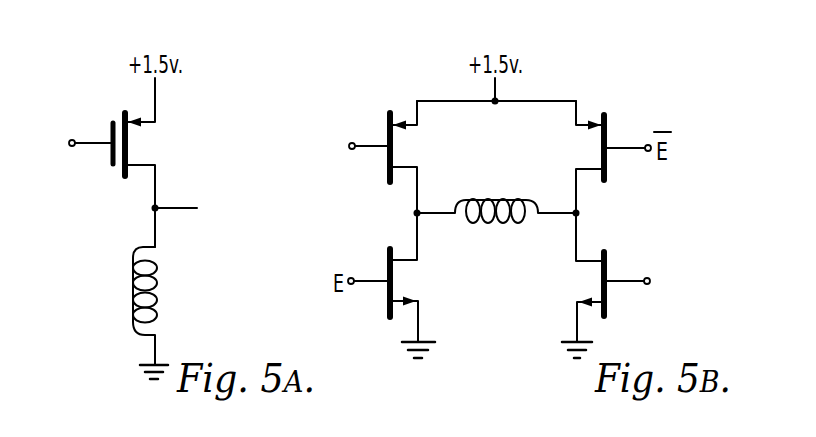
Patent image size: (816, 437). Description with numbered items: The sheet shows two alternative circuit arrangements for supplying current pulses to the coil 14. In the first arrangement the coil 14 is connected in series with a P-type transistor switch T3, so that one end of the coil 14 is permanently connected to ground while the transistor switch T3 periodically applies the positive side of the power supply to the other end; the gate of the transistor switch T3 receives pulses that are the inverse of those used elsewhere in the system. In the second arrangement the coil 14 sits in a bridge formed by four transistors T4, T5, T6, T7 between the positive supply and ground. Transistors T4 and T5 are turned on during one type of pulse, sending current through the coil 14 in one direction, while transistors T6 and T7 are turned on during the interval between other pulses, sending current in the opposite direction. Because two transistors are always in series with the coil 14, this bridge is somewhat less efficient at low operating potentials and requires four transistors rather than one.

In FIG. 5A, the coil 14 is at (133, 285).
In FIG. 5B, the coil 14 is at (493, 200).
In FIG. 5A, the P-type transistor switch T3 is at (128, 143).
In FIG. 5B, the transistor T4 is at (601, 149).
In FIG. 5B, the transistor T5 is at (393, 284).
In FIG. 5B, the transistor T6 is at (393, 147).
In FIG. 5B, the transistor T7 is at (601, 281).